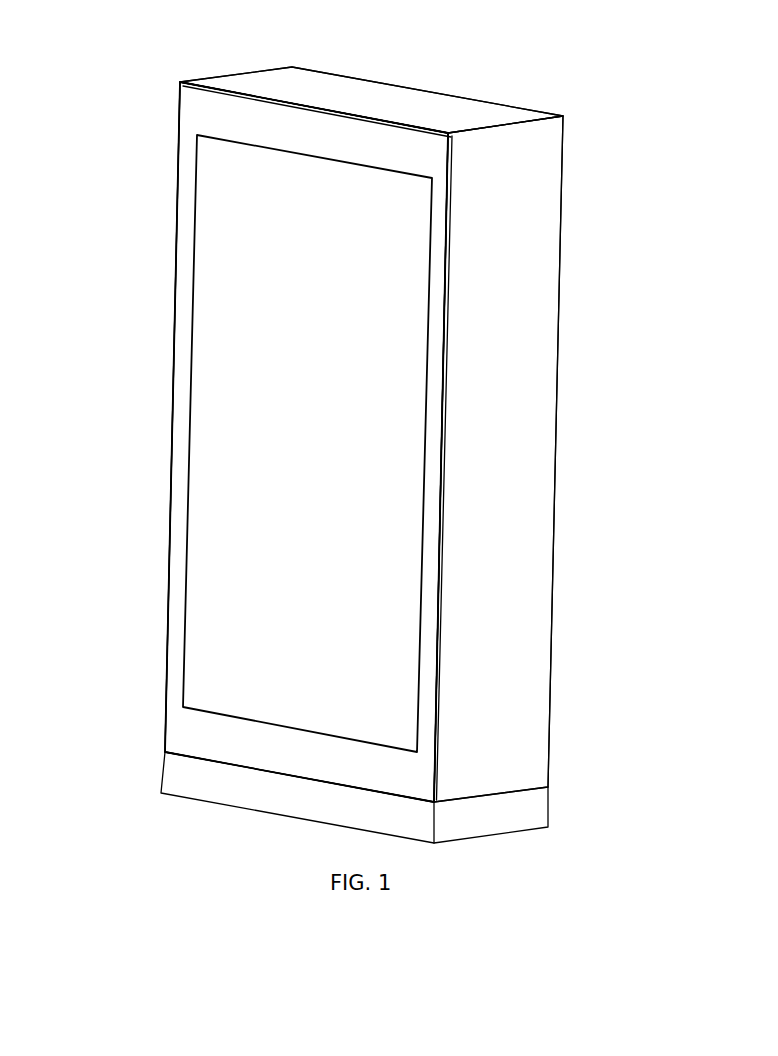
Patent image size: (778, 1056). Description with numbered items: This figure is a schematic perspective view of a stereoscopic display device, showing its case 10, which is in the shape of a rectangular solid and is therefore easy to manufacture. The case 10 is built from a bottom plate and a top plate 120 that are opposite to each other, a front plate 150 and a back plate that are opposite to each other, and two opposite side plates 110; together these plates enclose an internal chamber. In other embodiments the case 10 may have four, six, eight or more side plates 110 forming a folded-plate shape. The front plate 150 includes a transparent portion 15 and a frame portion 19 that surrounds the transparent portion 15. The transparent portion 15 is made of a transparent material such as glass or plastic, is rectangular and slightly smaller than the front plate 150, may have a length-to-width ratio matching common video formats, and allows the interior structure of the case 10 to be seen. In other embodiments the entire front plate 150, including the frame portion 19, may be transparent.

The case 10 is at (512, 578).
The side plates 110 is at (532, 362).
The top plate 120 is at (390, 98).
The front plate 150 is at (112, 105).
The frame portion 19 is at (227, 122).
The transparent portion 15 is at (243, 323).